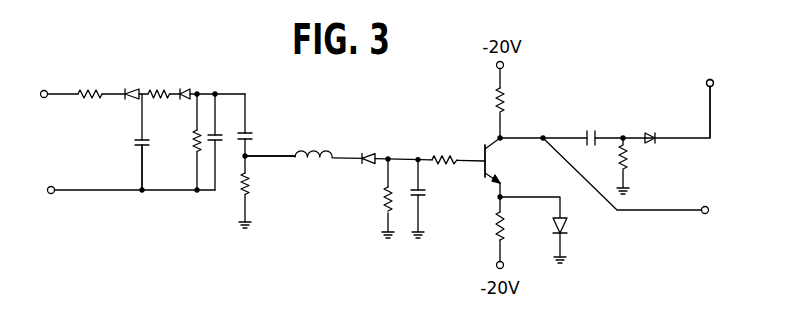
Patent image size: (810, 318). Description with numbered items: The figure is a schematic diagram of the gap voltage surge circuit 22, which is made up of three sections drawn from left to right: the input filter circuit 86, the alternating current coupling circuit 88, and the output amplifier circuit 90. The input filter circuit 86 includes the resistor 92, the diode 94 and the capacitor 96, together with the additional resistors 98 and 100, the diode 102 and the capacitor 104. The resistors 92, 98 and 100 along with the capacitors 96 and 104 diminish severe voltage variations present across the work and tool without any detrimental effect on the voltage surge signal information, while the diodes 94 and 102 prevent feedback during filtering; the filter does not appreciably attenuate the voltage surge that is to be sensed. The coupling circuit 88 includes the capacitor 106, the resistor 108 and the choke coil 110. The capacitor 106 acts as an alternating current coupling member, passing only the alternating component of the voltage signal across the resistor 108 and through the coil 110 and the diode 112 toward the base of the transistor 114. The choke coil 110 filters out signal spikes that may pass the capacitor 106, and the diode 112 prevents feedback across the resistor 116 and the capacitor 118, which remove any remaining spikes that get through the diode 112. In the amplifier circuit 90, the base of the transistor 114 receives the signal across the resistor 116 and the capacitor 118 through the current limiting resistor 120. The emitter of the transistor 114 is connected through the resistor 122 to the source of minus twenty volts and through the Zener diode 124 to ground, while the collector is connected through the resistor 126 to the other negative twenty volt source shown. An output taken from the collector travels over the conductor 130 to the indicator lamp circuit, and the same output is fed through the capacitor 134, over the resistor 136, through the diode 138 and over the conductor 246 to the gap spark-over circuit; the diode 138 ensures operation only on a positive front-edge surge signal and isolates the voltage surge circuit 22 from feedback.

The gap voltage surge circuit 22 is at (124, 40).
The input filter circuit 86 is at (140, 166).
The alternating current coupling circuit 88 is at (262, 158).
The output amplifier circuit 90 is at (490, 184).
The resistor 92 is at (88, 101).
The diode 94 is at (128, 91).
The capacitor 96 is at (138, 138).
The resistor 98 is at (165, 93).
The resistor 100 is at (195, 149).
The diode 102 is at (186, 99).
The capacitor 104 is at (220, 128).
The capacitor 106 is at (250, 132).
The resistor 108 is at (243, 187).
The choke coil 110 is at (318, 148).
The diode 112 is at (368, 166).
The transistor 114 is at (484, 145).
The resistor 116 is at (385, 196).
The capacitor 118 is at (421, 200).
The current limiting resistor 120 is at (446, 156).
The resistor 122 is at (495, 226).
The Zener diode 124 is at (565, 230).
The resistor 126 is at (505, 98).
The conductor 130 is at (666, 212).
The capacitor 134 is at (594, 130).
The resistor 136 is at (626, 157).
The diode 138 is at (656, 139).
The conductor 246 is at (711, 126).